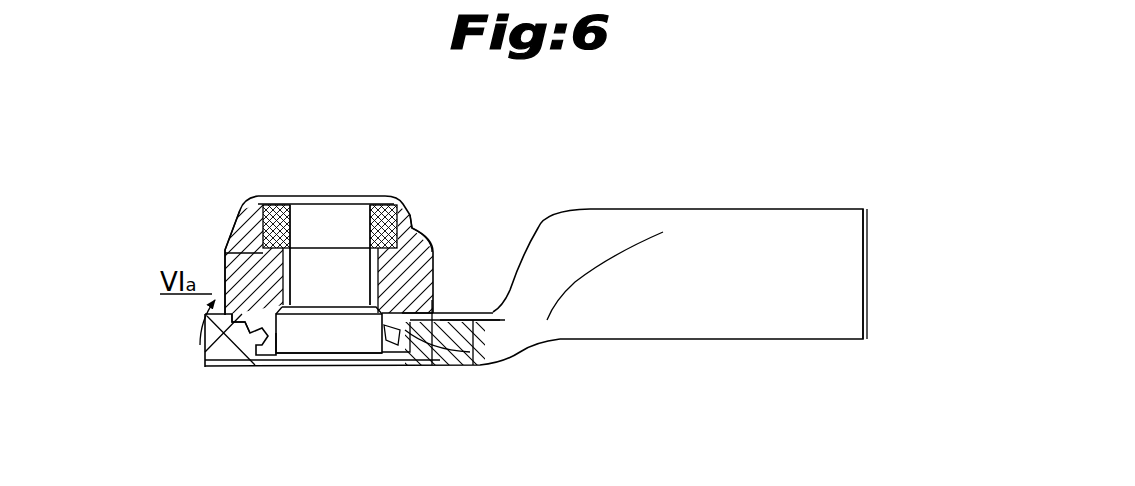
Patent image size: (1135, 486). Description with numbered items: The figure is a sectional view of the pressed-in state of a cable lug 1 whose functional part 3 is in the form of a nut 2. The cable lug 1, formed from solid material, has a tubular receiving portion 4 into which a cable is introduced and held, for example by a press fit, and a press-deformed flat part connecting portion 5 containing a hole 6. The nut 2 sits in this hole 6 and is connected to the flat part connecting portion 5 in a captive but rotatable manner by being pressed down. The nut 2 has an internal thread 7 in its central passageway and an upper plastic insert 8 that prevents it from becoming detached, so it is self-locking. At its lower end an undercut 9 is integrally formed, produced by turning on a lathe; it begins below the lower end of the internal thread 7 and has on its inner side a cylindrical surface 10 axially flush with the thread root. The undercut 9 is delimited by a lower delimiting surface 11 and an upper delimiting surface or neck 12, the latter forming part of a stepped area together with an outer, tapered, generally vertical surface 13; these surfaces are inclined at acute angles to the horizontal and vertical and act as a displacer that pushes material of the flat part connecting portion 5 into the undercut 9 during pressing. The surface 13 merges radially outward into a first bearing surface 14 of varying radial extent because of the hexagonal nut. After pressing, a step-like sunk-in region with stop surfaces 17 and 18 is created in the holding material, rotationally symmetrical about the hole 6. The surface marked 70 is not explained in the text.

The cable lug 1 is at (648, 158).
The nut 2 is at (410, 267).
The functional part 3 is at (228, 183).
The tubular receiving portion 4 is at (750, 295).
The flat part connecting portion 5 is at (217, 367).
The hole 6 is at (340, 367).
The internal thread 7 is at (374, 277).
The upper plastic insert 8 is at (283, 210).
The undercut 9 is at (418, 337).
The cylindrical surface 10 is at (350, 325).
The lower delimiting surface 11 is at (395, 335).
The upper delimiting surface 12 is at (418, 297).
The outer generally vertical surface 13 is at (470, 320).
The first bearing surface 14 is at (212, 325).
The stop surface 17 is at (252, 300).
The stop surface 18 is at (232, 290).
The outer wall surface 70 is at (410, 257).